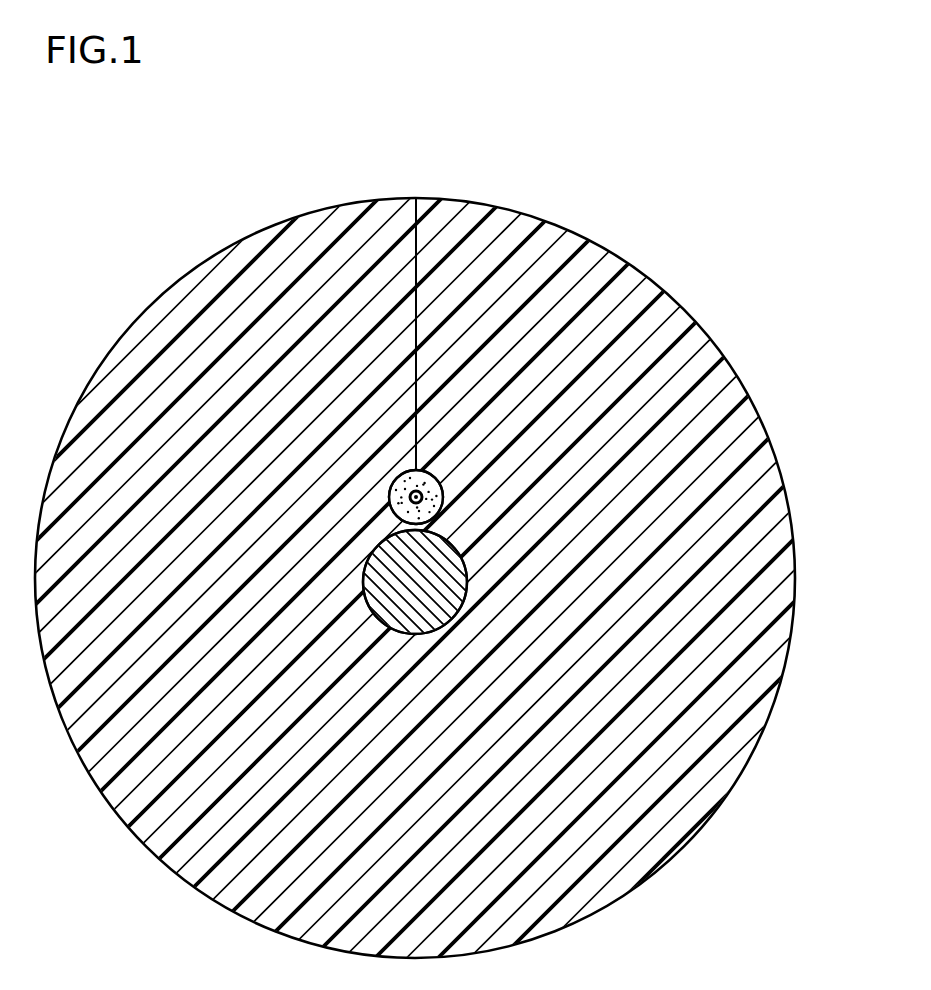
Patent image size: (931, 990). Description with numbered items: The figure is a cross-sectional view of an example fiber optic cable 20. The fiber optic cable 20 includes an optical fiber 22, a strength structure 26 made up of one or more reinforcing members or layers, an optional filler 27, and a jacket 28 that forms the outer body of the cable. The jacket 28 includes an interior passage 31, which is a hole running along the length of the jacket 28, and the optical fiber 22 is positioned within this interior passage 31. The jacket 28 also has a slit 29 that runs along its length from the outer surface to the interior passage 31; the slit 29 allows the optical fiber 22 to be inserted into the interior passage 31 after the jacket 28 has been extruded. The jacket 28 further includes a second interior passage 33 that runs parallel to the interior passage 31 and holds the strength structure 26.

The fiber optic cable 20 is at (697, 144).
The optical fiber 22 is at (418, 496).
The strength structure 26 is at (395, 597).
The filler 27 is at (388, 493).
The jacket 28 is at (770, 717).
The slit 29 is at (420, 238).
The interior passage 31 is at (421, 497).
The interior passage 33 is at (461, 611).